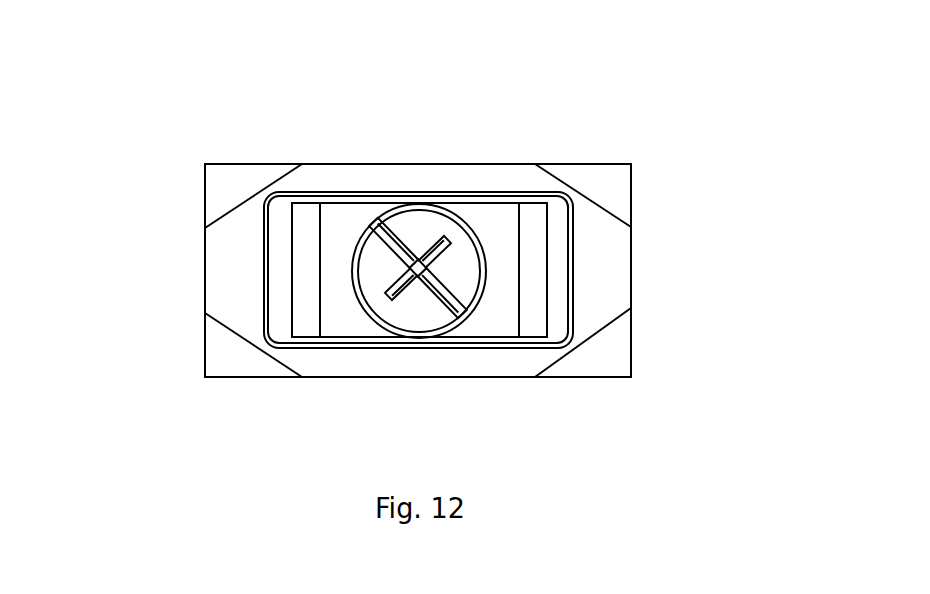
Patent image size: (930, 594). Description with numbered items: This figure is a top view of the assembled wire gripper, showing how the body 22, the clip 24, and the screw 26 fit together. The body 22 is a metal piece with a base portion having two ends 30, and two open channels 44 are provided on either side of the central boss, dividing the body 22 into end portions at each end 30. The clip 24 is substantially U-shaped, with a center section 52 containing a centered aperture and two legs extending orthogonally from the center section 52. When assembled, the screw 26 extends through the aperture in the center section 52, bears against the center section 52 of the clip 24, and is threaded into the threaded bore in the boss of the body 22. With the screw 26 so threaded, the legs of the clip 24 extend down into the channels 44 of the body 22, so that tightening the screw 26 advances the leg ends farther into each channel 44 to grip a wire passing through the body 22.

The body 22 is at (597, 362).
The clip 24 is at (462, 203).
The screw 26 is at (418, 313).
The ends 30 is at (203, 273).
The open channels 44 is at (281, 228).
The center section 52 is at (345, 320).